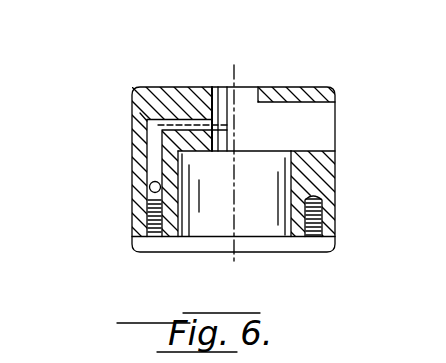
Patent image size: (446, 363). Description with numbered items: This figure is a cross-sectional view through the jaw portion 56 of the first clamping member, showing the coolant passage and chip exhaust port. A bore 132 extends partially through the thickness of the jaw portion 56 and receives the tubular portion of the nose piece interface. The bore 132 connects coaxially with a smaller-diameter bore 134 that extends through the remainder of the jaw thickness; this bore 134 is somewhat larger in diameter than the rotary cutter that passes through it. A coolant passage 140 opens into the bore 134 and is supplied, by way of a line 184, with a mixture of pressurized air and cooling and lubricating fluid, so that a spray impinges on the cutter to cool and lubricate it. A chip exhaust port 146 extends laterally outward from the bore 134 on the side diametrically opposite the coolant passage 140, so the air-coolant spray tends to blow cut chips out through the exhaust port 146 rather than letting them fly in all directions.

The jaw portion 56 is at (287, 87).
The coolant passage 140 is at (172, 120).
The smaller-diameter bore 134 is at (237, 88).
The chip exhaust port 146 is at (317, 151).
The line 184 is at (150, 189).
The bore 132 is at (178, 220).